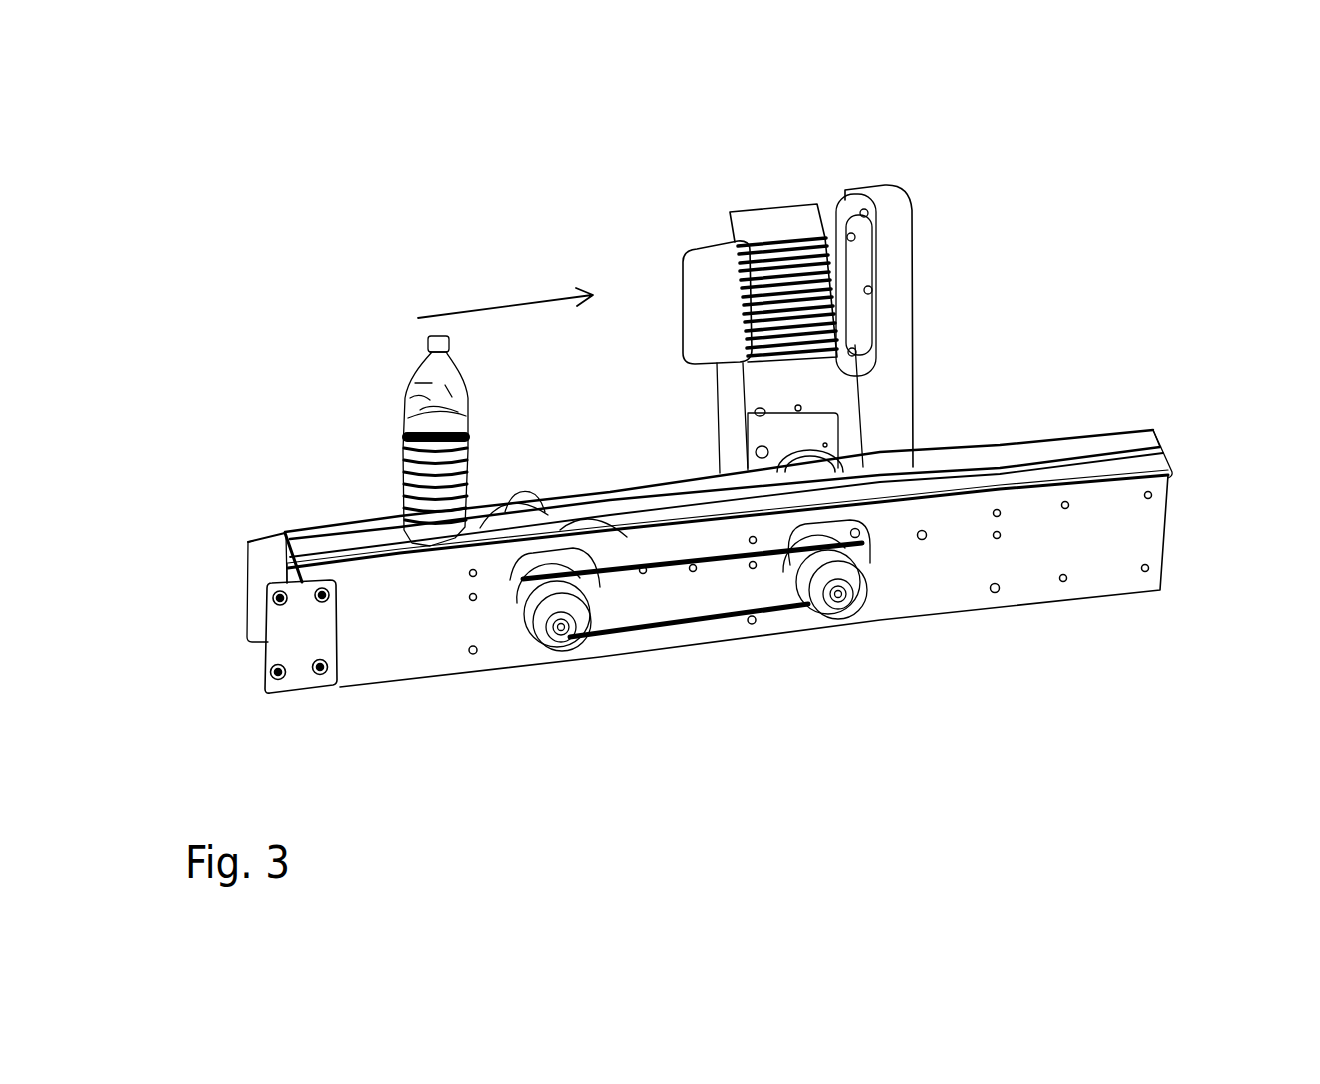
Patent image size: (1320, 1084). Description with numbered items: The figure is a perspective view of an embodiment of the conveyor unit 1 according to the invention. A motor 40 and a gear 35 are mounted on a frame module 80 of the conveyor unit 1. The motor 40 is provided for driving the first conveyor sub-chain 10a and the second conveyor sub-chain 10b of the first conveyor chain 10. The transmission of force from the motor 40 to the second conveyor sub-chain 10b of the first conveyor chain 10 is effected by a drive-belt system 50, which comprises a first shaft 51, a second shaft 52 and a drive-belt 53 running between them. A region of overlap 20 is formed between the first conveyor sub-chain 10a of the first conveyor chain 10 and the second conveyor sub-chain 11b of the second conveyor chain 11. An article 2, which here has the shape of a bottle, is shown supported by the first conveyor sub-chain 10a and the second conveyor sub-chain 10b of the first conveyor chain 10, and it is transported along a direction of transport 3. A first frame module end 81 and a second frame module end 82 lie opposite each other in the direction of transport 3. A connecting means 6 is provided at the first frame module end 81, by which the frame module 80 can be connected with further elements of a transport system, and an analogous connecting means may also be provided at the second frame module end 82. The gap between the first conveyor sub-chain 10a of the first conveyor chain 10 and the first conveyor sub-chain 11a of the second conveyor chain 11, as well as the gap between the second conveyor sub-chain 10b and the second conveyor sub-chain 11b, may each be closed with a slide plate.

The conveyor unit 1 is at (1085, 640).
The article 2 is at (420, 384).
The direction of transport 3 is at (512, 298).
The connecting means 6 is at (302, 640).
The first conveyor chain 10 is at (231, 584).
The first conveyor sub-chain 10a is at (333, 533).
The second conveyor sub-chain 10b is at (323, 552).
The second conveyor chain 11 is at (784, 432).
The first conveyor sub-chain 11a is at (1025, 457).
The second conveyor sub-chain 11b is at (1163, 453).
The region of overlap 20 is at (622, 673).
The gear 35 is at (847, 433).
The motor 40 is at (730, 242).
The drive-belt system 50 is at (707, 520).
The first shaft 51 is at (840, 592).
The second shaft 52 is at (559, 633).
The drive-belt 53 is at (617, 633).
The frame module 80 is at (417, 640).
The first frame module end 81 is at (332, 546).
The second frame module end 82 is at (1160, 440).